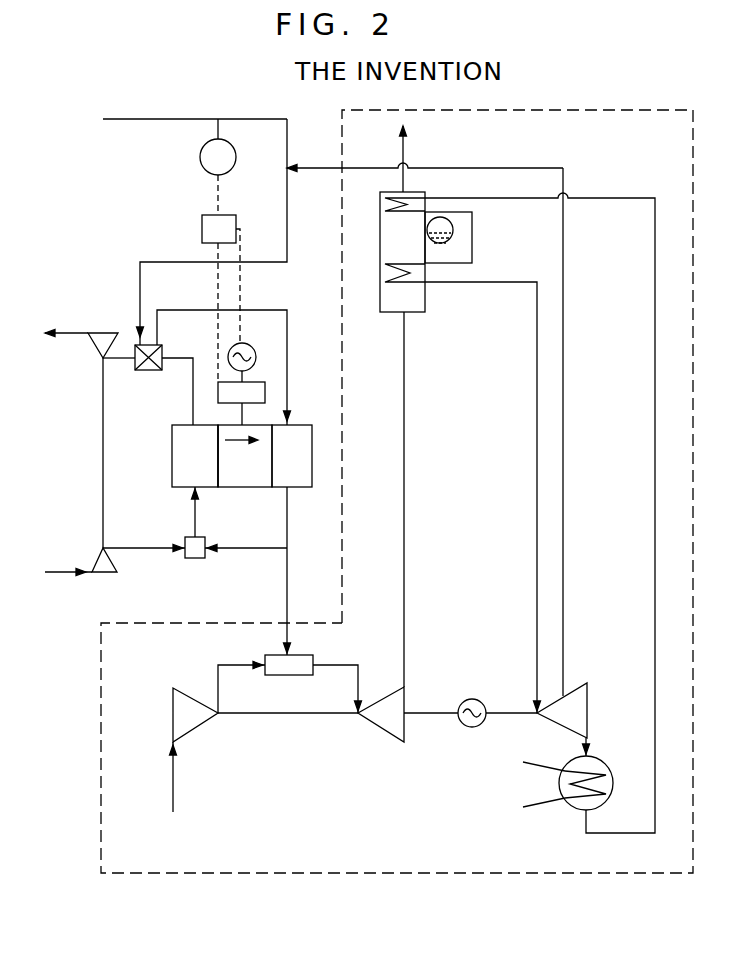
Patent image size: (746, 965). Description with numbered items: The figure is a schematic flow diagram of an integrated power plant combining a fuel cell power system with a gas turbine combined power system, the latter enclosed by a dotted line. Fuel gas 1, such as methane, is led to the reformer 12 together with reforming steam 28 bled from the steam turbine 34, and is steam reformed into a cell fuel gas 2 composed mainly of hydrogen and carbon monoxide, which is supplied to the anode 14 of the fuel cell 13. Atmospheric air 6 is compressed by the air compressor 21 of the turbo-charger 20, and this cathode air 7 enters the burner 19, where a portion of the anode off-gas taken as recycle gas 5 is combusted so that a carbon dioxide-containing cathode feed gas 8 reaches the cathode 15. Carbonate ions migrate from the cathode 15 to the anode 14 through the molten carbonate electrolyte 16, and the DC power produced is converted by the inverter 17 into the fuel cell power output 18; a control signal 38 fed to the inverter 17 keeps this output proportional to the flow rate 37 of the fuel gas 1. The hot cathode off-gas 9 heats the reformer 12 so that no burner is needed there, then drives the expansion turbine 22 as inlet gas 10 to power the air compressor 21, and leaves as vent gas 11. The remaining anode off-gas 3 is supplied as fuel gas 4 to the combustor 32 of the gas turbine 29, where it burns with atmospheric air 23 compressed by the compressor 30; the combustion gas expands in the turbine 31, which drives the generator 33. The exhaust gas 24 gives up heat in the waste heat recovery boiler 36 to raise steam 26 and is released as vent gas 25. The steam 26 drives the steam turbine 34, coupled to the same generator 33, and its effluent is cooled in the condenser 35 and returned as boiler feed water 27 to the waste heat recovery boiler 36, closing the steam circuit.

The fuel gas 1 is at (140, 120).
The cell fuel gas 2 is at (287, 372).
The anode off-gas 3 is at (287, 520).
The fuel gas for gas turbine combustor 4 is at (287, 643).
The recycle gas 5 is at (245, 548).
The atmospheric air 6 is at (62, 572).
The cathode air 7 is at (135, 548).
The cathode feed gas 8 is at (195, 515).
The cathode off-gas 9 is at (193, 385).
The inlet gas 10 is at (120, 358).
The vent gas 11 is at (70, 333).
The reformer 12 is at (148, 370).
The fuel cell 13 is at (242, 487).
The anode 14 is at (312, 430).
The cathode 15 is at (172, 460).
The electrolyte 16 is at (227, 425).
The inverter 17 is at (262, 382).
The fuel cell power output 18 is at (245, 343).
The burner 19 is at (192, 558).
The turbo-charger 20 is at (103, 463).
The air compressor 21 is at (105, 572).
The expansion turbine 22 is at (103, 333).
The atmospheric air 23 is at (173, 800).
The exhaust gas 24 is at (404, 527).
The vent gas 25 is at (403, 148).
The steam 26 is at (537, 655).
The boiler feed water 27 is at (620, 833).
The reforming steam 28 is at (563, 615).
The gas turbine 29 is at (290, 713).
The compressor 30 is at (173, 713).
The turbine 31 is at (388, 735).
The combustor 32 is at (300, 675).
The generator 33 is at (470, 727).
The steam turbine 34 is at (587, 710).
The condenser 35 is at (605, 760).
The waste heat recovery boiler 36 is at (380, 312).
The flow rate 37 is at (200, 160).
The control signal 38 is at (202, 228).